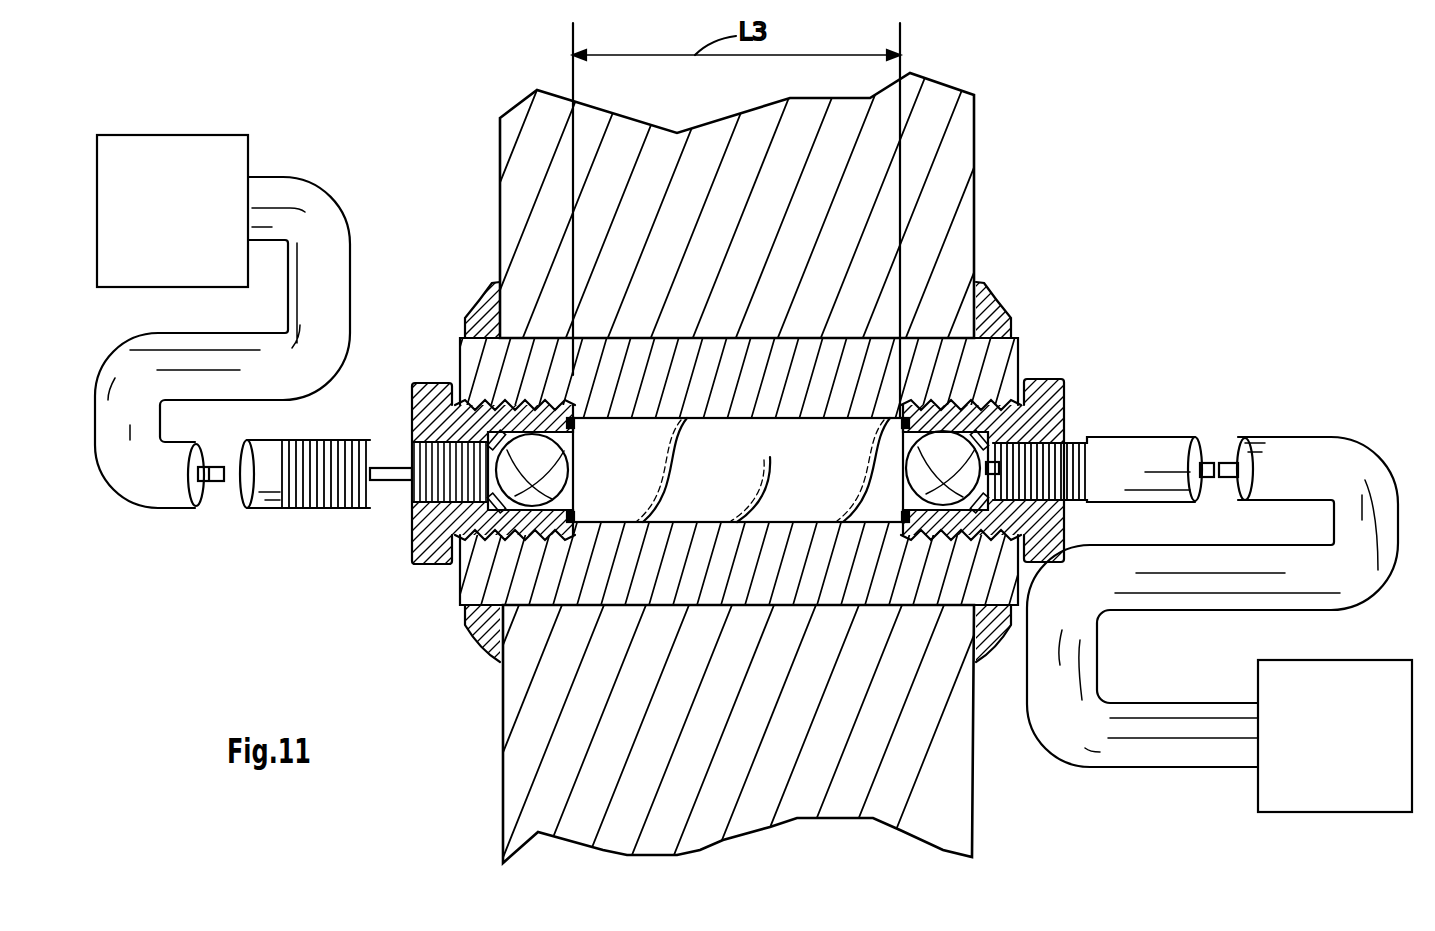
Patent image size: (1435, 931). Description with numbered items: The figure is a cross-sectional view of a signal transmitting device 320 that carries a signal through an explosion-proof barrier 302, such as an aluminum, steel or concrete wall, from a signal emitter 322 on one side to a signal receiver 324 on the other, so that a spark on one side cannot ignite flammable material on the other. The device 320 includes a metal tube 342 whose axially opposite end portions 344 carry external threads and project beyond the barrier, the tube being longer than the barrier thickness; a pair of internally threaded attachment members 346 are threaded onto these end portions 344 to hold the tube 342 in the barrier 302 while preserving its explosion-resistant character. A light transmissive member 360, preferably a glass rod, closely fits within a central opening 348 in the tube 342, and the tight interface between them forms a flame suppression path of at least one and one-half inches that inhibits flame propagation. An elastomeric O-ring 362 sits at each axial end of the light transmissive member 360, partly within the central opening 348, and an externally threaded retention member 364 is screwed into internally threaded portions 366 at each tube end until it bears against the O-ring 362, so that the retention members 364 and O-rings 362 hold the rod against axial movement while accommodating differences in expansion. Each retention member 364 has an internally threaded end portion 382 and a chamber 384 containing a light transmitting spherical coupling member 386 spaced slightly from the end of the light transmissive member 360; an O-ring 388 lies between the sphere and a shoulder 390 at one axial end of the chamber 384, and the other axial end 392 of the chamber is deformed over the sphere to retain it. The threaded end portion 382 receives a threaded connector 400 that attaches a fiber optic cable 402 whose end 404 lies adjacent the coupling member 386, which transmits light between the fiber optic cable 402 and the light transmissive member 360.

The explosion-proof barrier 302 is at (908, 100).
The signal transmitting device 320 is at (736, 490).
The signal emitter 322 is at (190, 145).
The signal receiver 324 is at (1283, 790).
The tube 342 is at (605, 605).
The end portions 344 is at (463, 595).
The attachment members 346 is at (1000, 312).
The central opening 348 is at (783, 418).
The light transmissive member 360 is at (827, 475).
The O-ring 362 is at (897, 428).
The retention member 364 is at (903, 498).
The internally threaded portions 366 is at (430, 556).
The internally threaded end portion 382 is at (413, 507).
The chamber 384 is at (690, 443).
The spherical coupling member 386 is at (560, 488).
The O-ring 388 is at (537, 471).
The shoulder 390 is at (435, 468).
The other axial end 392 is at (500, 437).
The threaded connector 400 is at (1068, 420).
The fiber optic cable 402 is at (1228, 463).
The end 404 is at (390, 507).